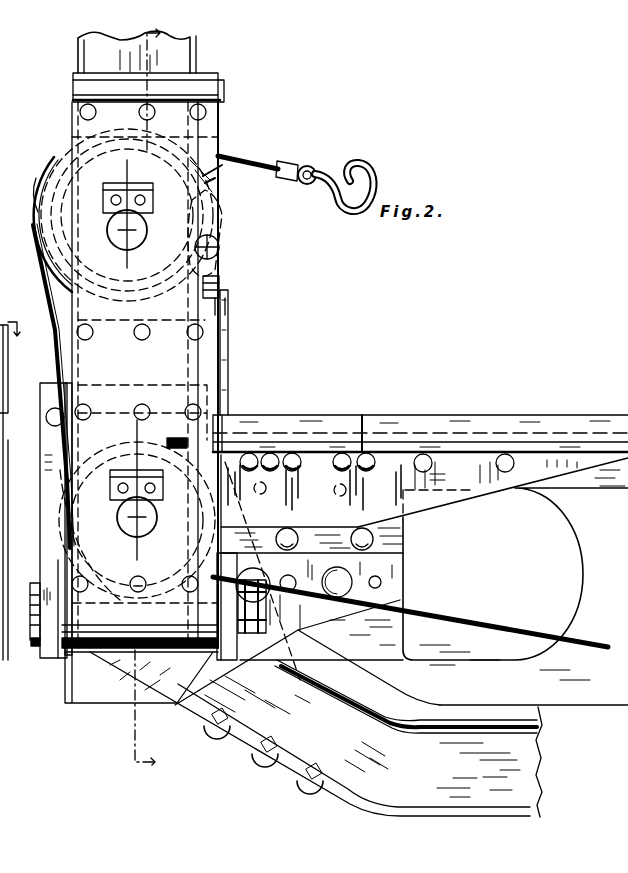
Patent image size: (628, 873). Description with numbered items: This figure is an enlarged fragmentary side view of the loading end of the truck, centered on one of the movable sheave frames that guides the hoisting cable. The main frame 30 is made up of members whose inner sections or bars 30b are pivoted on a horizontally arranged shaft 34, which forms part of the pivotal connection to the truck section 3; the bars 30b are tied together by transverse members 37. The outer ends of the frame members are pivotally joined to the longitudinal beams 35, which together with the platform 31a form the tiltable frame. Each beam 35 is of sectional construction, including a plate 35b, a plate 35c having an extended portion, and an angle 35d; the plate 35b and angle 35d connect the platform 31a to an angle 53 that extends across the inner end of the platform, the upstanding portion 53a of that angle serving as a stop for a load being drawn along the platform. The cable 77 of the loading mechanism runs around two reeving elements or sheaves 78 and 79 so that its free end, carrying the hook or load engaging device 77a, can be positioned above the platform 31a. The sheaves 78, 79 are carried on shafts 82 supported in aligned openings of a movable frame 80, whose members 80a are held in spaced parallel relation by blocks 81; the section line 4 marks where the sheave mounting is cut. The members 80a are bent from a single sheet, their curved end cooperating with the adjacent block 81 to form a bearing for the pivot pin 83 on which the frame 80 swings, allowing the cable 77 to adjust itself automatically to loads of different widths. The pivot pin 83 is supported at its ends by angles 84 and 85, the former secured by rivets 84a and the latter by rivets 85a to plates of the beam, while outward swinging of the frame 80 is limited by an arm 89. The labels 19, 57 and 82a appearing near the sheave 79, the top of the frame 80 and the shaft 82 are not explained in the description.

The truck section 3 is at (15, 340).
The section line 4- 4 is at (155, 401).
The hoisting cable 19 is at (38, 386).
The main frame 30 is at (409, 713).
The inner sections 30b is at (543, 772).
The platform 31a is at (502, 422).
The horizontally arranged shaft 34 is at (90, 693).
The longitudinal beams 35 is at (616, 708).
The plate 35b is at (562, 440).
The plate 35c is at (404, 533).
The angle 35d is at (462, 500).
The transverse members 37 is at (250, 742).
The angle 53 is at (326, 427).
The upstanding portion of angle 53a is at (229, 386).
The upper post extension 57 is at (182, 63).
The cable 77 is at (253, 156).
The load engaging device 77a is at (363, 216).
The reeving element 78 is at (142, 401).
The reeving element 79 is at (48, 162).
The movable frame 80 is at (205, 358).
The frame members 80a is at (226, 98).
The blocks 81 is at (75, 84).
The shafts 82 is at (133, 236).
The hub bracket 82a is at (200, 313).
The pivot pin 83 is at (33, 645).
The angle 84 is at (48, 660).
The rivets 84a is at (50, 517).
The angle 85 is at (330, 622).
The rivets 85a is at (352, 573).
The arms 89 is at (190, 440).